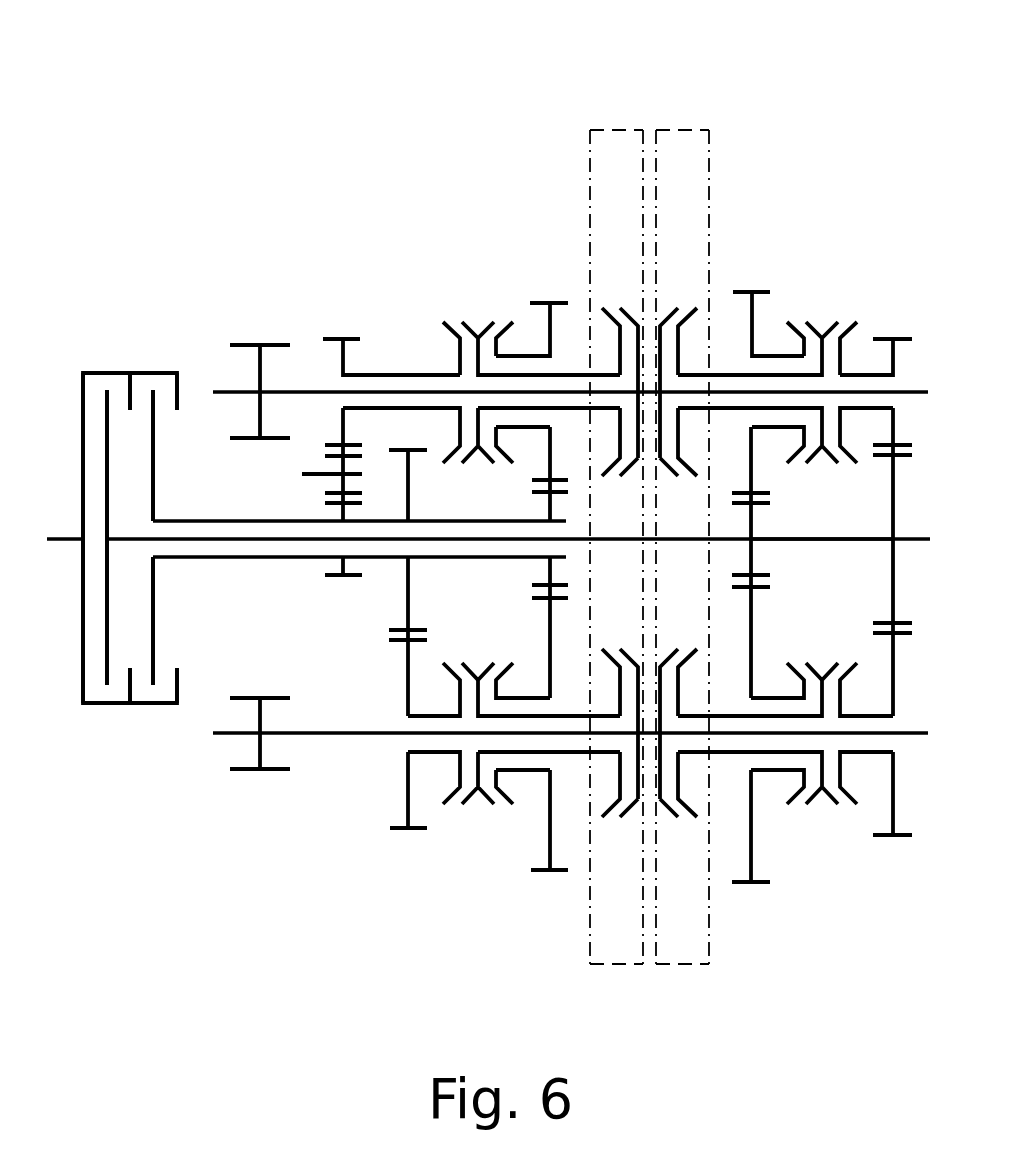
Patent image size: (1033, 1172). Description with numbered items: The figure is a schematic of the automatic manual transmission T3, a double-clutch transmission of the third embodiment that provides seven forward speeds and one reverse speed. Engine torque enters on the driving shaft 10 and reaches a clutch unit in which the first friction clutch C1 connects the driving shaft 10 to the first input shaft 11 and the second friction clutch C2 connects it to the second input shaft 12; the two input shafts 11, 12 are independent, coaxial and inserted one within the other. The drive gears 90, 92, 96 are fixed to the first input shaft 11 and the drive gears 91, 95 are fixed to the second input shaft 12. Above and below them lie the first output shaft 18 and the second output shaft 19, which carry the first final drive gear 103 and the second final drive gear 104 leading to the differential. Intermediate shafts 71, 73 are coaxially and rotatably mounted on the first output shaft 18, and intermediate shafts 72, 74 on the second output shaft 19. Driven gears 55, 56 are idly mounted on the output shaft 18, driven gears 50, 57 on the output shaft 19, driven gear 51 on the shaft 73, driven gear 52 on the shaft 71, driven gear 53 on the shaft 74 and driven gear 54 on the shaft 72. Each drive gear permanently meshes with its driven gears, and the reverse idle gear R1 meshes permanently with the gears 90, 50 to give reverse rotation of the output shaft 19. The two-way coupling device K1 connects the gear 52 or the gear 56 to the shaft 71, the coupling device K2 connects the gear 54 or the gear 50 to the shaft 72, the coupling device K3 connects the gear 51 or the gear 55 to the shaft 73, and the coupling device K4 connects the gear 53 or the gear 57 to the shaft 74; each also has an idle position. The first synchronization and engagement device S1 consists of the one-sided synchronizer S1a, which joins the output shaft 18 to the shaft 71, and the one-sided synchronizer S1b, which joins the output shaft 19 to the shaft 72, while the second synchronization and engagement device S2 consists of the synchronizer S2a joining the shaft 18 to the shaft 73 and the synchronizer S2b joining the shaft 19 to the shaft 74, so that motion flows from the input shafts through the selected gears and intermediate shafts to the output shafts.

The automatic manual transmission T3 is at (248, 123).
The first friction clutch C1 is at (165, 385).
The second friction clutch C2 is at (93, 385).
The driving shaft 10 is at (68, 538).
The first input shaft 11 is at (242, 560).
The second input shaft 12 is at (808, 542).
The first output shaft 18 is at (222, 735).
The second output shaft 19 is at (227, 392).
The driven gear 50 is at (329, 337).
The driven gear 51 is at (768, 885).
The driven gear 52 is at (537, 874).
The driven gear 53 is at (759, 290).
The driven gear 54 is at (551, 300).
The driven gear 55 is at (885, 838).
The driven gear 56 is at (397, 833).
The driven gear 57 is at (903, 337).
The intermediate shaft 71 is at (555, 715).
The intermediate shaft 72 is at (568, 413).
The intermediate shaft 73 is at (743, 715).
The intermediate shaft 74 is at (738, 412).
The drive gear 90 is at (330, 578).
The drive gear 91 is at (760, 505).
The drive gear 92 is at (535, 583).
The drive gear 95 is at (880, 620).
The drive gear 96 is at (420, 626).
The first final drive gear 103 is at (247, 772).
The second final drive gear 104 is at (279, 440).
The reverse idle gear R1 is at (328, 491).
The two-way coupling device K1 is at (478, 822).
The two-way coupling device K2 is at (478, 300).
The two-way coupling device K3 is at (822, 822).
The two-way coupling device K4 is at (822, 300).
The first synchronization and engagement device S1 is at (603, 128).
The second synchronization and engagement device S2 is at (690, 128).
The one-sided synchronizer S1a is at (616, 840).
The one-sided synchronizer S1b is at (620, 290).
The one-sided synchronizer S2a is at (682, 840).
The one-sided synchronizer S2b is at (680, 290).